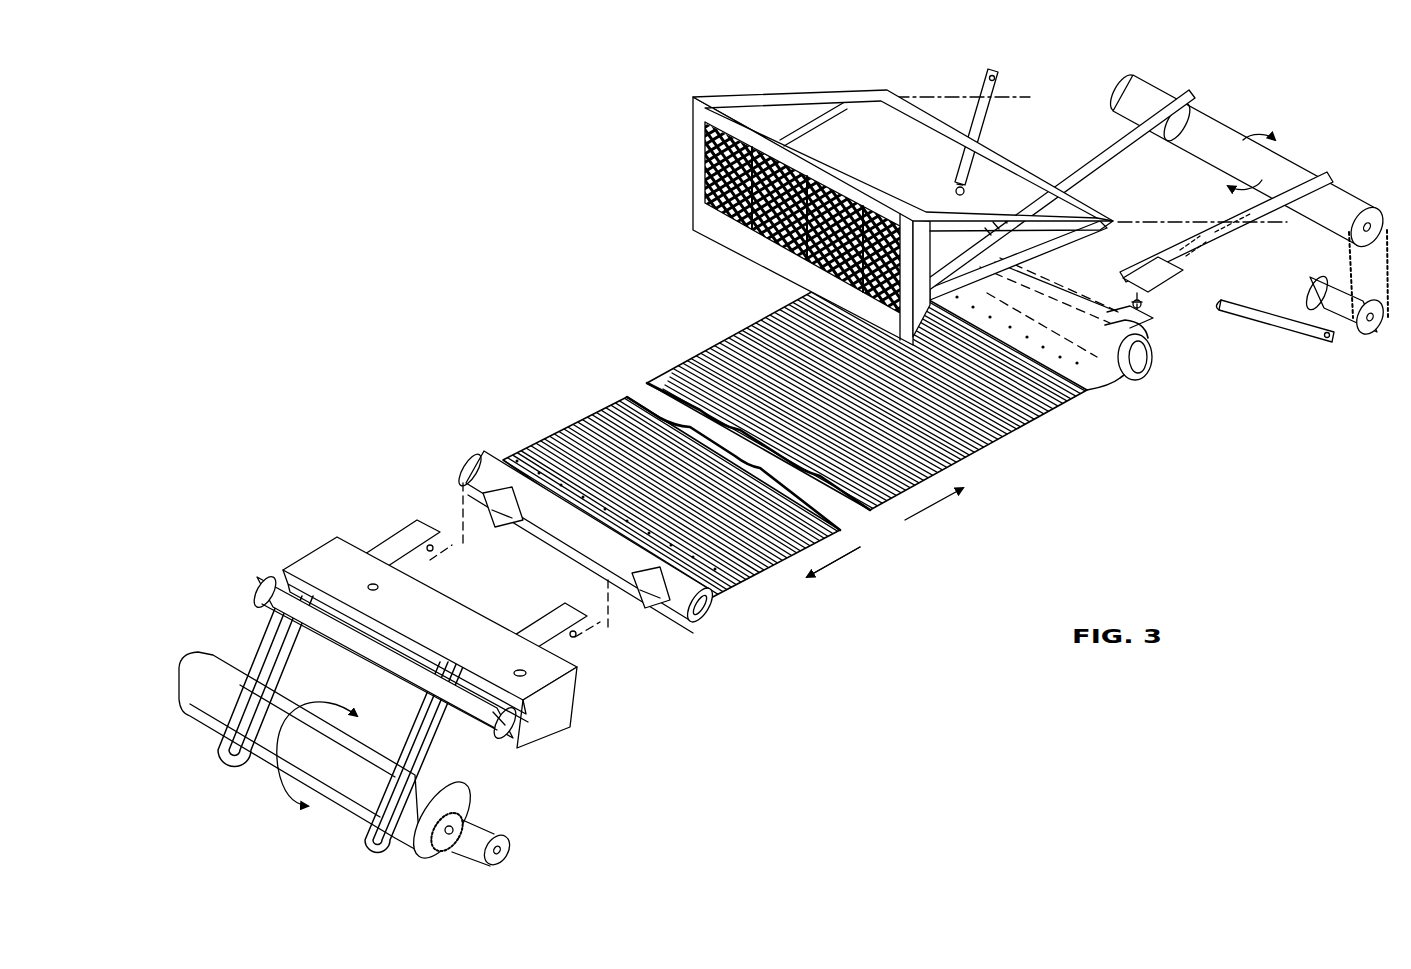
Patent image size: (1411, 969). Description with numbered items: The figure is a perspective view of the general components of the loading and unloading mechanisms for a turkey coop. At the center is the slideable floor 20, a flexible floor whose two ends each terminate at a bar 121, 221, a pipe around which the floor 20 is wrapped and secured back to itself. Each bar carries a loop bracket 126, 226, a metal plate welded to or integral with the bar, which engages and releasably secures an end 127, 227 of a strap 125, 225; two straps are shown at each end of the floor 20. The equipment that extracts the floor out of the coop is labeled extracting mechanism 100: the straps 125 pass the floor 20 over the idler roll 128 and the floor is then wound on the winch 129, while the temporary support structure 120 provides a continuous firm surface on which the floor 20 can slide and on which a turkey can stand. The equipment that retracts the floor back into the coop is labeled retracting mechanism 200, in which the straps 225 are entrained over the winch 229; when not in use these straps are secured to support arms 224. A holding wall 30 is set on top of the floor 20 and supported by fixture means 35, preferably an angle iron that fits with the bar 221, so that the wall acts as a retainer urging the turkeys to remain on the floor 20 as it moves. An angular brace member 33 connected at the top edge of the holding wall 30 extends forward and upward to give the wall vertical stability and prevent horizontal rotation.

The slideable floor 20 is at (576, 412).
The holding wall 30 is at (870, 220).
The angular brace member 33 is at (786, 99).
The fixture means 35 is at (690, 222).
The extracting mechanism 100 is at (585, 804).
The temporary support structure 120 is at (313, 553).
The bar 121 is at (713, 608).
The strap 125 is at (347, 739).
The loop bracket 126 is at (636, 610).
The strap end 127 is at (419, 521).
The idler roll 128 is at (498, 714).
The winch 129 is at (416, 858).
The retracting mechanism 200 is at (1063, 120).
The bar 221 is at (1148, 365).
The support arm 224 is at (990, 127).
The strap 225 is at (1224, 248).
The loop bracket 226 is at (1144, 334).
The strap end 227 is at (1150, 296).
The winch 229 is at (1350, 203).